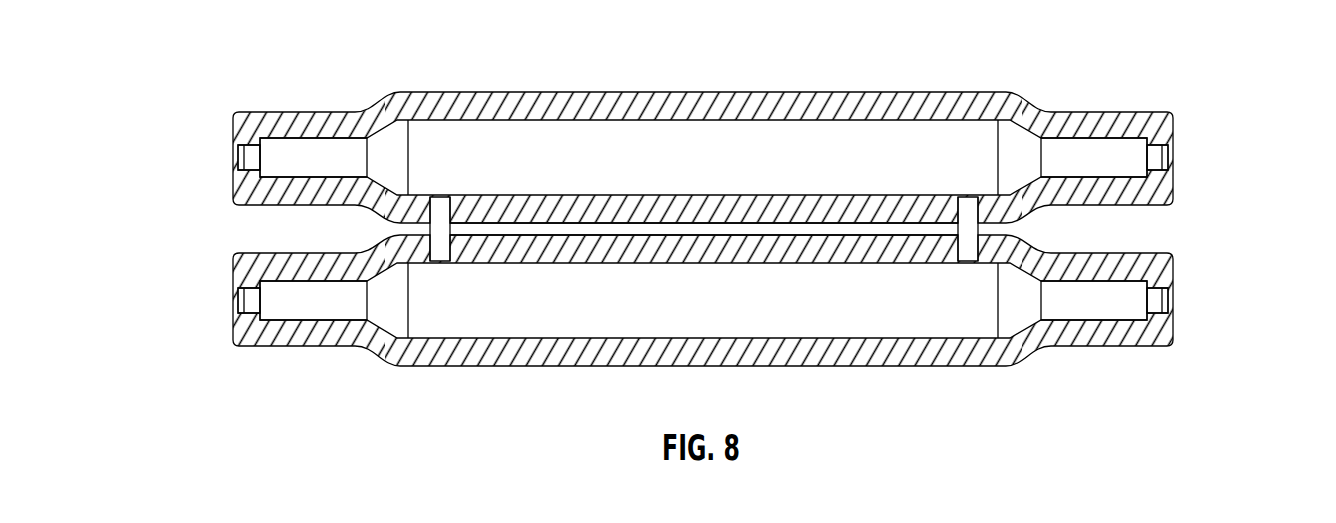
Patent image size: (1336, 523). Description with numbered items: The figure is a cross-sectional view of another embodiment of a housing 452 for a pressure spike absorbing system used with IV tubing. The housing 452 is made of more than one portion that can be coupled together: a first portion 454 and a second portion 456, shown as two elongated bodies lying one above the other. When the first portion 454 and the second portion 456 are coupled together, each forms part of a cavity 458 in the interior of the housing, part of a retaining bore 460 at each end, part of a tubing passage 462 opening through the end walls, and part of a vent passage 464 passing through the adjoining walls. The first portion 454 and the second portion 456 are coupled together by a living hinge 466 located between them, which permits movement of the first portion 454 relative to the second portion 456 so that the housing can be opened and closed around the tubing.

The housing 452 is at (716, 61).
The first portion 454 is at (574, 136).
The second portion 456 is at (574, 322).
The cavity 458 is at (880, 135).
The retaining bore 460 is at (318, 150).
The tubing passage 462 is at (250, 158).
The vent passage 464 is at (438, 208).
The living hinge 466 is at (502, 227).